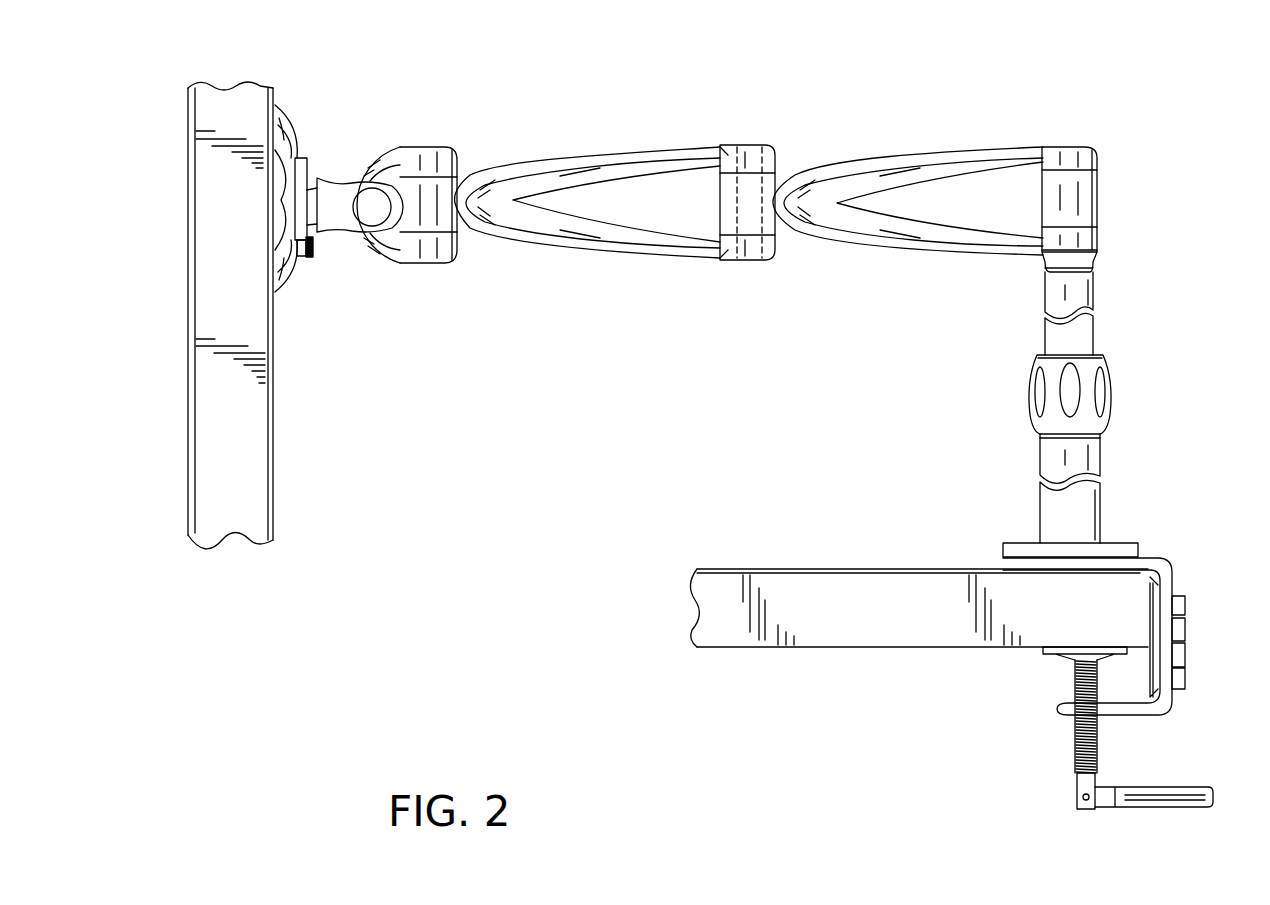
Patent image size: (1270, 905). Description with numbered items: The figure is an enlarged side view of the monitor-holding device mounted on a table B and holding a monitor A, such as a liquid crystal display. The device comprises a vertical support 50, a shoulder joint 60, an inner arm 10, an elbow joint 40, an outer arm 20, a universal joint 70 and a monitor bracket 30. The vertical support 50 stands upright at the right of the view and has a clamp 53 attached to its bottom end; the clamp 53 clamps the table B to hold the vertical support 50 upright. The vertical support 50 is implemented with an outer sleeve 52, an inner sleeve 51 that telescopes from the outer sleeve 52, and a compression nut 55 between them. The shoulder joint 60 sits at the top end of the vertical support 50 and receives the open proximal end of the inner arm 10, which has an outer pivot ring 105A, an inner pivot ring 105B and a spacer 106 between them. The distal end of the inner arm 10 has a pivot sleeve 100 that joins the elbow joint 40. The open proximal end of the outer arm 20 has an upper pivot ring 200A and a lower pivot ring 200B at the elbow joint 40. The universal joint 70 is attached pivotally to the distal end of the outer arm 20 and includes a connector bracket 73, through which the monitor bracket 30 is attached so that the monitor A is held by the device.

The inner arm 10 is at (929, 169).
The outer arm 20 is at (613, 148).
The monitor bracket 30 is at (303, 156).
The elbow joint 40 is at (768, 217).
The vertical support 50 is at (1098, 530).
The inner sleeve 51 is at (1057, 290).
The outer sleeve 52 is at (1093, 512).
The clamp 53 is at (1170, 567).
The compression nut 55 is at (1100, 425).
The shoulder joint 60 is at (1135, 164).
The universal joint 70 is at (370, 134).
The connector bracket 73 is at (313, 218).
The pivot sleeve 100 is at (770, 182).
The outer pivot ring 105A is at (1090, 143).
The inner pivot ring 105B is at (1088, 243).
The spacer 106 is at (1088, 203).
The upper pivot ring 200A is at (747, 160).
The lower pivot ring 200B is at (748, 257).
The monitor A is at (240, 473).
The table B is at (827, 578).